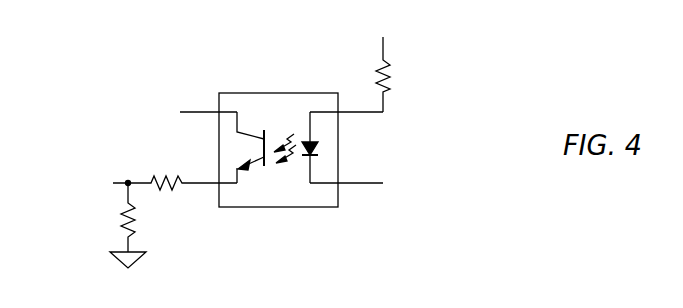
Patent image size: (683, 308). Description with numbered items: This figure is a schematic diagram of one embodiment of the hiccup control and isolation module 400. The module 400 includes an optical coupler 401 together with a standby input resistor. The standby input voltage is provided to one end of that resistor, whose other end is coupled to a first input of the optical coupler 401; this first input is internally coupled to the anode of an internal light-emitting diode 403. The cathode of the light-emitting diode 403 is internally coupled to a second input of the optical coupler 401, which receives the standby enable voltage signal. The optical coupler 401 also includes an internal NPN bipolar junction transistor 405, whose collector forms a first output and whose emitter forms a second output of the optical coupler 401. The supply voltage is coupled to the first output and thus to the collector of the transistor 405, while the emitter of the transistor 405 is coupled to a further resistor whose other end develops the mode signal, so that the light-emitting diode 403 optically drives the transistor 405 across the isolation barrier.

The hiccup control and isolation module 400 is at (142, 41).
The optical coupler 401 is at (288, 207).
The light-emitting diode 403 is at (310, 141).
The NPN bipolar junction transistor 405 is at (248, 132).